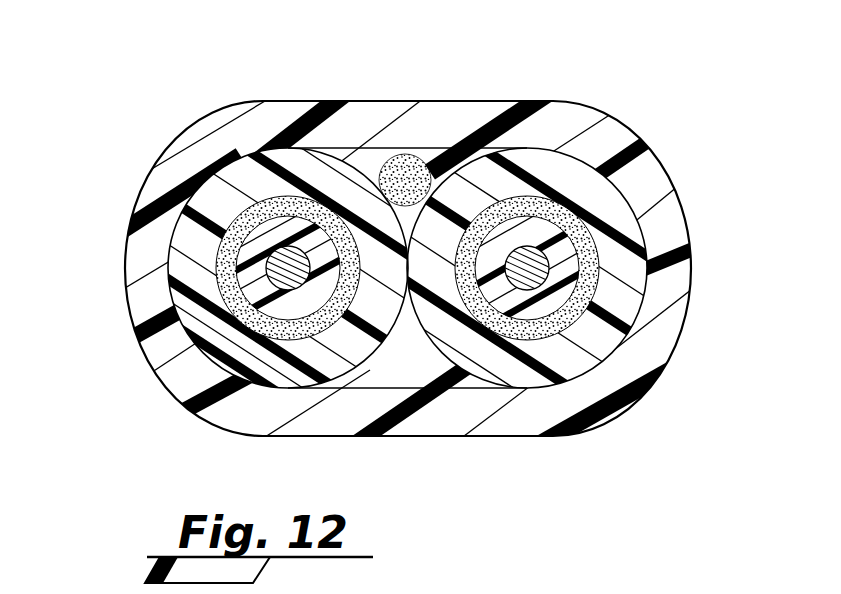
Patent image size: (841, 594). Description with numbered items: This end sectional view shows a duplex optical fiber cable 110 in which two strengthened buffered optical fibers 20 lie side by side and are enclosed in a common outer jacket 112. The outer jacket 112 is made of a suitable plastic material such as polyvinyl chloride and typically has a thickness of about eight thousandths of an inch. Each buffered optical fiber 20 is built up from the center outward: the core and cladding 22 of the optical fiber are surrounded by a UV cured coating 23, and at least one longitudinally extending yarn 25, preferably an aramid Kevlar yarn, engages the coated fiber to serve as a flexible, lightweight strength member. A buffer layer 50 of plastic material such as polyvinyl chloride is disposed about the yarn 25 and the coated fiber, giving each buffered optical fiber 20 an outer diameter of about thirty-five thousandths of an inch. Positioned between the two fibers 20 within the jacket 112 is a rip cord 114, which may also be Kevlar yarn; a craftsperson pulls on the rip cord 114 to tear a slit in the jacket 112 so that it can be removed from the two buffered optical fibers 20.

The duplex optical fiber cable 110 is at (641, 91).
The outer jacket 112 is at (371, 117).
The rip cord 114 is at (433, 162).
The buffered optical fiber 20 is at (228, 173).
The core and cladding 22 is at (288, 247).
The UV cured coating 23 is at (247, 252).
The yarn 25 is at (237, 315).
The buffer layer 50 is at (208, 325).